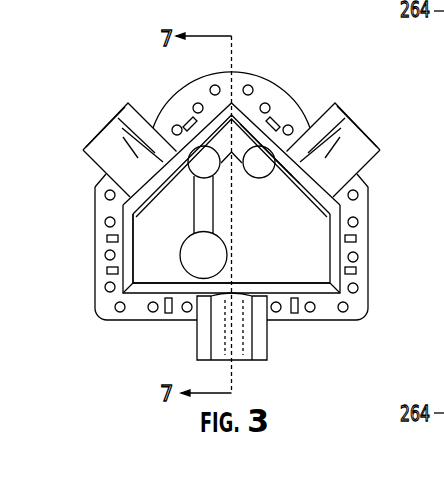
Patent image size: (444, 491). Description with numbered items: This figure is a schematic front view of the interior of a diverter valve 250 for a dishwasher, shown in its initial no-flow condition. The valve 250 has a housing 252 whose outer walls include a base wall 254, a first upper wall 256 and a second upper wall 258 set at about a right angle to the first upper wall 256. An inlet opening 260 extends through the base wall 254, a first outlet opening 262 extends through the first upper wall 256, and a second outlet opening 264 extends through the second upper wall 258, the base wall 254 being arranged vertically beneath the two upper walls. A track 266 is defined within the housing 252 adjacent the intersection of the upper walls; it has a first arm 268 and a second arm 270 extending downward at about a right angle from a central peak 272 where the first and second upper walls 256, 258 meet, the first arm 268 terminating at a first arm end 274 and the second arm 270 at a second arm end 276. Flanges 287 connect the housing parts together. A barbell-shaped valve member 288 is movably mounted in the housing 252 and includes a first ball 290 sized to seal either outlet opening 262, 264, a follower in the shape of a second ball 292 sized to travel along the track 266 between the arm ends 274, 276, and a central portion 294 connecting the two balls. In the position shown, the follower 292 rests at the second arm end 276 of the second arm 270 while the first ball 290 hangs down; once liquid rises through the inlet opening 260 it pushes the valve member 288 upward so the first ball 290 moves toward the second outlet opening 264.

The valve 250 is at (288, 85).
The housing 252 is at (356, 257).
The base wall 254 is at (145, 300).
The first upper wall 256 is at (303, 103).
The second upper wall 258 is at (176, 126).
The inlet opening 260 is at (243, 305).
The first outlet opening 262 is at (312, 160).
The second outlet opening 264 is at (104, 176).
The track 266 is at (250, 136).
The first arm 268 is at (243, 172).
The second arm 270 is at (236, 216).
The central peak 272 is at (228, 100).
The first arm end 274 is at (288, 178).
The second arm end 276 is at (193, 216).
The flanges 287 is at (363, 210).
The valve member 288 is at (153, 248).
The first ball 290 is at (166, 262).
The second ball 292 is at (135, 105).
The central portion 294 is at (133, 220).